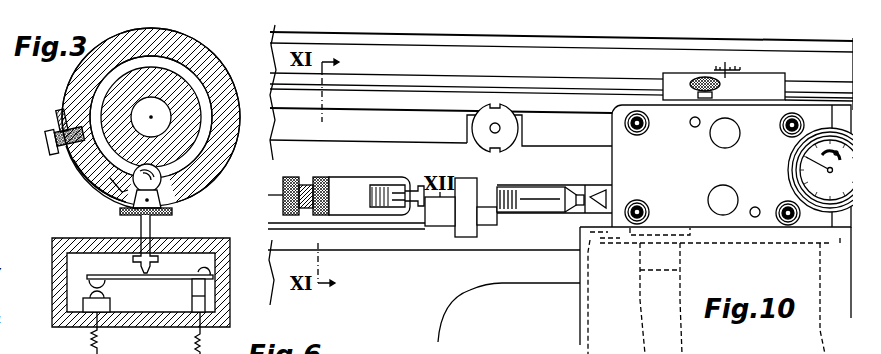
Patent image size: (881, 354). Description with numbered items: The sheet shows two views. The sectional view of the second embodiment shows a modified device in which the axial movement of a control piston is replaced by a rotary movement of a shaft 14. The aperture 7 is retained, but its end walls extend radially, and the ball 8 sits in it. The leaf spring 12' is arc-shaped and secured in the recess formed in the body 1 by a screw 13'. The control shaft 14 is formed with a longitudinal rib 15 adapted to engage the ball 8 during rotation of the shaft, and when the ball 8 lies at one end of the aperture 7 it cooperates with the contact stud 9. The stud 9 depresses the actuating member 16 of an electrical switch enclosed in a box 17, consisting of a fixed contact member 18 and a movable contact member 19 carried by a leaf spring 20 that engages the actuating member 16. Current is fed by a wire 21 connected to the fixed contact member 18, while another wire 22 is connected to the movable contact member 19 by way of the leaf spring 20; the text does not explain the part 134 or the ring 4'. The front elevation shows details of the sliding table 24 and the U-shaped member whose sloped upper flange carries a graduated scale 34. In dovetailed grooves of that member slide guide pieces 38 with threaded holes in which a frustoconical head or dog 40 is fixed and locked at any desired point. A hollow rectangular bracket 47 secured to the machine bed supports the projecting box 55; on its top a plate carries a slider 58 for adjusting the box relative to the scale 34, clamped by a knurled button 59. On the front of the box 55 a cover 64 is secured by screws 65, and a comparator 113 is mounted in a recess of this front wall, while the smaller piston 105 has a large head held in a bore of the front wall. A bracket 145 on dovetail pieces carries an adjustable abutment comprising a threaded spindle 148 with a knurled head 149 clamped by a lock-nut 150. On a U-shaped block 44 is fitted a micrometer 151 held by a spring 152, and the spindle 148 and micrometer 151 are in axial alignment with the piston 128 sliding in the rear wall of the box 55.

In FIG. 3, the body 1 is at (222, 156).
In FIG. 3, the inner ring 4' is at (155, 127).
In FIG. 3, the control shaft 14 is at (185, 100).
In FIG. 3, the screw 13' is at (51, 133).
In FIG. 3, the longitudinal rib 15 is at (104, 172).
In FIG. 3, the leaf spring 12' is at (99, 199).
In FIG. 3, the aperture 7 is at (124, 199).
In FIG. 3, the ball 8 is at (125, 216).
In FIG. 3, the contact stud 9 is at (161, 187).
In FIG. 3, the actuating member 16 is at (150, 234).
In FIG. 3, the box 17 is at (228, 290).
In FIG. 3, the fixed contact member 18 is at (84, 306).
In FIG. 3, the movable contact member 19 is at (90, 283).
In FIG. 3, the leaf spring 20 is at (170, 280).
In FIG. 3, the wire 21 is at (99, 346).
In FIG. 3, the wire 22 is at (208, 347).
In FIG. 3, the connection 134 is at (181, 324).
In FIG. 10, the table 24 is at (508, 43).
In FIG. 10, the graduated scale 34 is at (752, 68).
In FIG. 10, the guide pieces 38 is at (524, 140).
In FIG. 10, the frustoconical head 40 is at (510, 118).
In FIG. 10, the U-shaped block 44 is at (491, 226).
In FIG. 10, the hollow rectangular bracket 47 is at (463, 309).
In FIG. 10, the box 55 is at (612, 162).
In FIG. 10, the slider 58 is at (778, 83).
In FIG. 10, the knurled button 59 is at (724, 88).
In FIG. 10, the cover 64 is at (725, 222).
In FIG. 10, the screws 65 is at (637, 127).
In FIG. 10, the smaller piston 105 is at (716, 194).
In FIG. 10, the comparator 113 is at (830, 166).
In FIG. 10, the piston 128 is at (596, 208).
In FIG. 10, the bracket 145 is at (352, 181).
In FIG. 10, the spindle 148 is at (393, 208).
In FIG. 10, the knurled head 149 is at (294, 176).
In FIG. 10, the lock-nut 150 is at (330, 176).
In FIG. 10, the micrometer 151 is at (488, 190).
In FIG. 10, the spring 152 is at (463, 180).